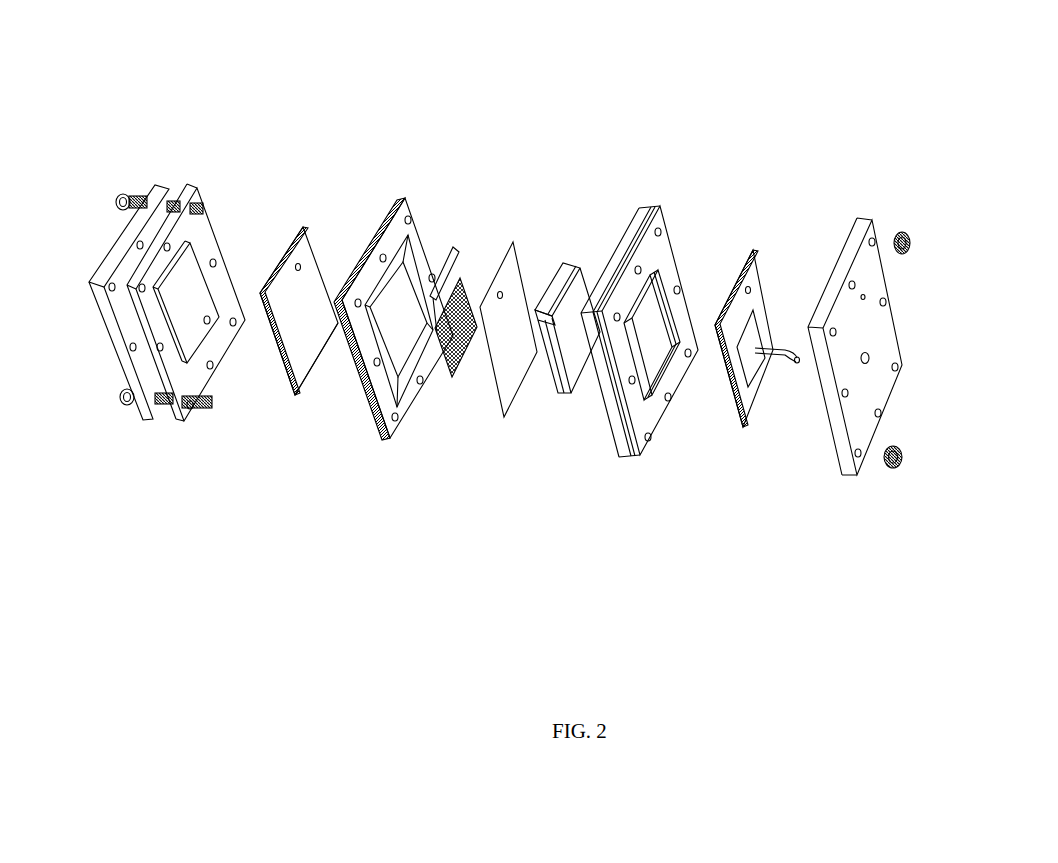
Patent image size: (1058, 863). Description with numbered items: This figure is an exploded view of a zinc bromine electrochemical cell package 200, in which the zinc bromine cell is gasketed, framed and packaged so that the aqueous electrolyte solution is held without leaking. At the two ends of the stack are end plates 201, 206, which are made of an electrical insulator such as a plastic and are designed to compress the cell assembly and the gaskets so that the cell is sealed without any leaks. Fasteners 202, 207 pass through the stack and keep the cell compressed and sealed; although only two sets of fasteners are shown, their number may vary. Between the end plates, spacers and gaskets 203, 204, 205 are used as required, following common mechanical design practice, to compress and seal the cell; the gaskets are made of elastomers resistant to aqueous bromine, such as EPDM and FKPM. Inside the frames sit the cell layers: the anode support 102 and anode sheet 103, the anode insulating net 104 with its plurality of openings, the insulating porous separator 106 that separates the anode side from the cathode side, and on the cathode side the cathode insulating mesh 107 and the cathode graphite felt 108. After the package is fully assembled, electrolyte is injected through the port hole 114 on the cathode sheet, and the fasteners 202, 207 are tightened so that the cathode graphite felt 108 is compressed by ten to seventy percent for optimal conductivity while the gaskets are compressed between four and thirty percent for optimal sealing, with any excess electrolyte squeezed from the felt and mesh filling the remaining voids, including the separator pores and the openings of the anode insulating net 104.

The zinc bromine electrochemical cell package 200 is at (243, 69).
The end plate 201 is at (98, 268).
The fastener 202 is at (115, 200).
The spacer and gasket 203 is at (193, 188).
The spacer and gasket 204 is at (403, 198).
The spacer and gasket 205 is at (647, 207).
The end plate 206 is at (855, 218).
The fastener 207 is at (908, 235).
The anode support 102 is at (287, 380).
The anode sheet 103 is at (317, 363).
The anode insulating net 104 is at (452, 380).
The insulating porous separator 106 is at (505, 410).
The cathode insulating mesh 107 is at (553, 393).
The cathode graphite felt 108 is at (570, 393).
The port hole 114 is at (743, 427).